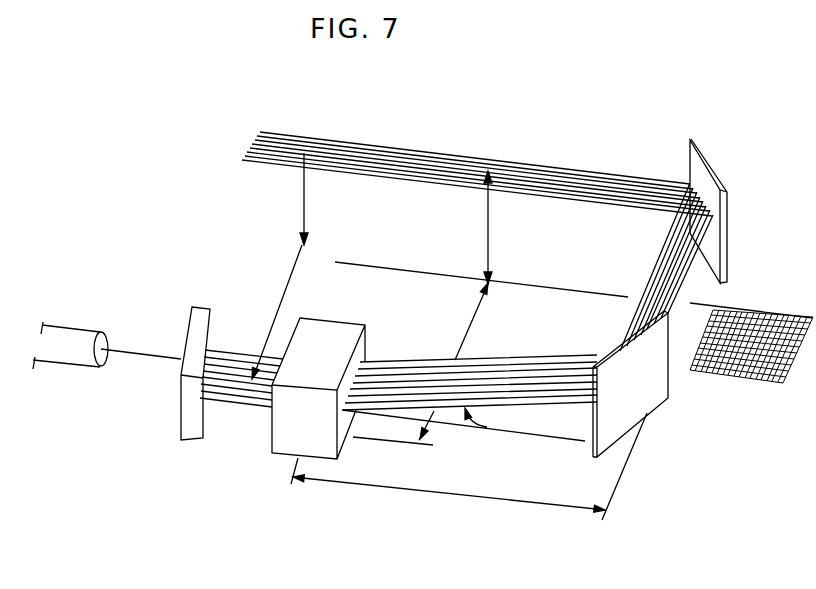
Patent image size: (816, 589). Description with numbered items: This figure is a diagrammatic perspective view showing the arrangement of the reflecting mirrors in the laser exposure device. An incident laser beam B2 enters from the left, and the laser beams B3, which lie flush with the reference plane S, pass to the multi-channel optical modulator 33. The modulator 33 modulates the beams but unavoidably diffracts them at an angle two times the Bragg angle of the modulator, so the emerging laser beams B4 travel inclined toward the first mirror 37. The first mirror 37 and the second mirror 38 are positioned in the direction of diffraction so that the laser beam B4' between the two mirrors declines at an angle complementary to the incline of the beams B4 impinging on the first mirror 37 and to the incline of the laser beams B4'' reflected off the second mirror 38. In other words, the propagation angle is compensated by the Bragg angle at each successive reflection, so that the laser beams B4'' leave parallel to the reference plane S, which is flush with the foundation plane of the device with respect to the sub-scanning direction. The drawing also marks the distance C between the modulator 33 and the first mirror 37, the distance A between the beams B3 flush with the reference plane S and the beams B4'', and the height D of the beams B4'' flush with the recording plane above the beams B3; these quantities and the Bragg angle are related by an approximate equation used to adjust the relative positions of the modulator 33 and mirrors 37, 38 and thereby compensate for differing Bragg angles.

The laser beam B2 is at (143, 358).
The laser beams B3 is at (237, 395).
The multi-channel optical modulator 33 is at (347, 413).
The laser beams B4 is at (470, 363).
The first mirror 37 is at (648, 400).
The laser beam B4' is at (657, 267).
The second mirror 38 is at (728, 215).
The laser beams B4'' is at (477, 161).
The reference plane S is at (751, 346).
The height D is at (312, 199).
The height H is at (498, 227).
The distance A is at (370, 312).
The distance C is at (469, 468).